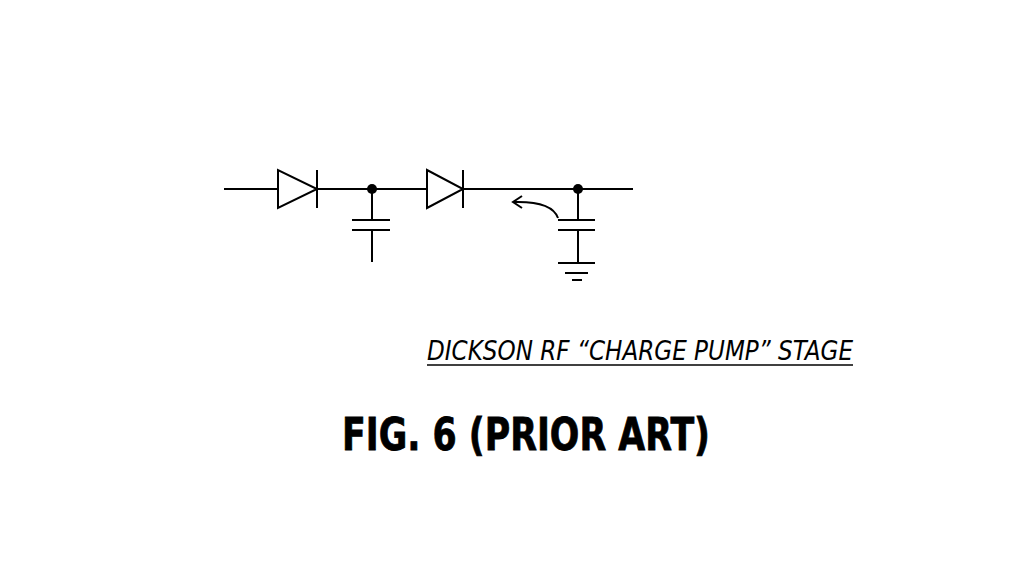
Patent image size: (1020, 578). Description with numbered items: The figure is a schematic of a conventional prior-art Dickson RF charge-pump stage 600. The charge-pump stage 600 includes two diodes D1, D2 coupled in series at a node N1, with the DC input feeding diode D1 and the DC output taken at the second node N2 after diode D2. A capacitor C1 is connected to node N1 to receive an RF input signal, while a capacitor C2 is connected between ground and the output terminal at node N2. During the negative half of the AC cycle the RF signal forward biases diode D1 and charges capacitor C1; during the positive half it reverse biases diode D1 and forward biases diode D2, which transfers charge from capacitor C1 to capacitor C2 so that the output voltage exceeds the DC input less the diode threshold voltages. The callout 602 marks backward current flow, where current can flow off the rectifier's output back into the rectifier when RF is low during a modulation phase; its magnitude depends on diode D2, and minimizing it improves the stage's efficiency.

The Dickson RF charge-pump stage 600 is at (134, 128).
The backward current flow 602 is at (572, 49).
The diode D1 is at (297, 174).
The diode D2 is at (445, 175).
The capacitor C1 is at (387, 225).
The capacitor C2 is at (594, 234).
The node N1 is at (371, 176).
The second node N2 is at (575, 176).